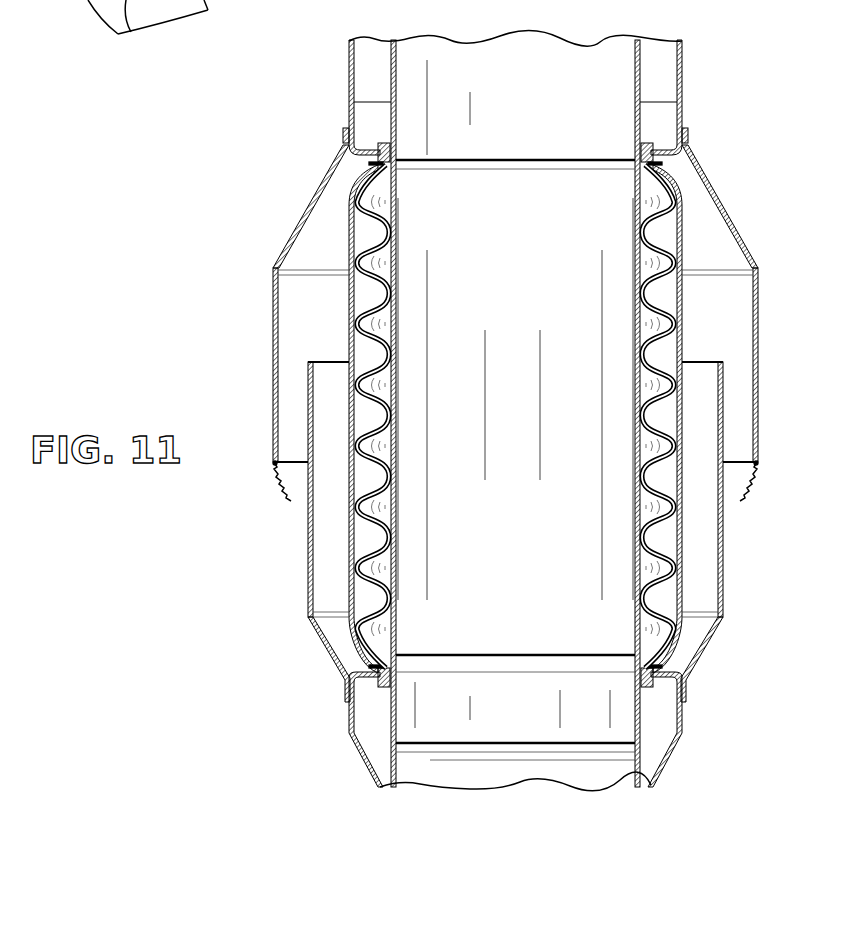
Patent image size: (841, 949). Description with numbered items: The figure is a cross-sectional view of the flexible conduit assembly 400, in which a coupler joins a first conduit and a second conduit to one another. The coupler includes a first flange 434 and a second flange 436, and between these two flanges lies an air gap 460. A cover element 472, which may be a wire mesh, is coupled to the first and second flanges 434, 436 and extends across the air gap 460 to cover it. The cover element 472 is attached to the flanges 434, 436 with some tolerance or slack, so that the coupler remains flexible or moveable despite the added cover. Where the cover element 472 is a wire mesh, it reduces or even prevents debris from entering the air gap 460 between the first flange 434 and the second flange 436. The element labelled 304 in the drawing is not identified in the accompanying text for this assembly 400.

The flexible conduit assembly 400 is at (660, 29).
The inner pipe 304 is at (540, 778).
The first flange 434 is at (273, 283).
The air gap 460 is at (303, 390).
The second flange 436 is at (308, 600).
The cover element 472 is at (277, 480).